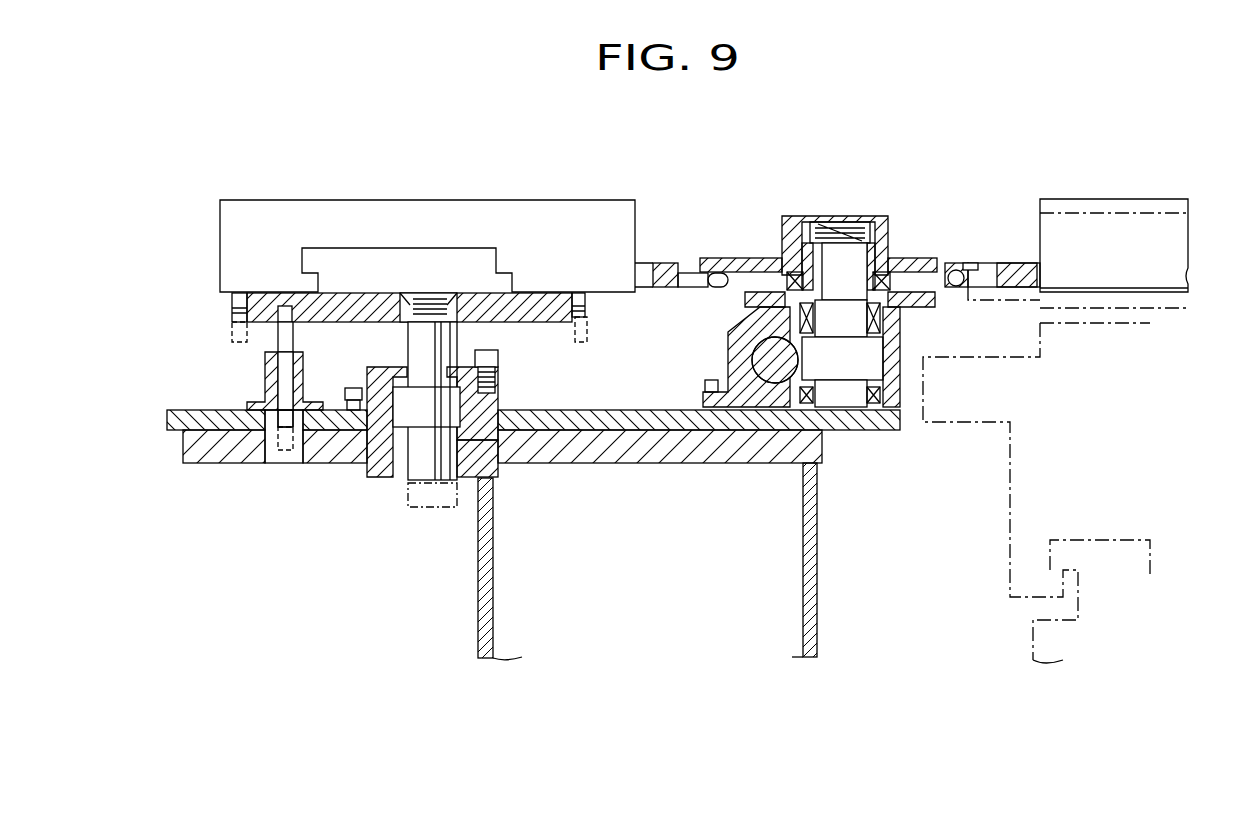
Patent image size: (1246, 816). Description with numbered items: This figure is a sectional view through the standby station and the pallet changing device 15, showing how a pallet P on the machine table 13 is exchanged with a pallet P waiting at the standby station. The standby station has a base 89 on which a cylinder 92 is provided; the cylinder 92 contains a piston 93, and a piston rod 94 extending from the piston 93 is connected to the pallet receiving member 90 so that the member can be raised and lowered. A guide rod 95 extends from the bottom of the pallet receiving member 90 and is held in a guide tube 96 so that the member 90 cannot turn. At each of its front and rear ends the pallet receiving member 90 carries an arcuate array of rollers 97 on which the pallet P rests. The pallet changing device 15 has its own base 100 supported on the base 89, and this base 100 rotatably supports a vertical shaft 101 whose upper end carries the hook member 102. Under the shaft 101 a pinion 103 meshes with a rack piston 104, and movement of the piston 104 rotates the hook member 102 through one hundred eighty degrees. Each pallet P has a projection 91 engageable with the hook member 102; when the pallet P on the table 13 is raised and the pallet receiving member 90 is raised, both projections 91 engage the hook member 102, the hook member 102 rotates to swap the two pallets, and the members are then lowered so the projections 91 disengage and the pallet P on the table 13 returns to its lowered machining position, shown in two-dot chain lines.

The table 13 is at (1150, 320).
The pallet changing device 15 is at (888, 214).
The base 89 is at (678, 452).
The pallet receiving member 90 is at (540, 310).
The projection 91 is at (668, 262).
The cylinder 92 is at (490, 458).
The piston 93 is at (495, 410).
The piston rod 94 is at (410, 333).
The guide rod 95 is at (284, 362).
The guide tube 96 is at (265, 388).
The rollers 97 is at (232, 300).
The base 100 is at (737, 342).
The vertical shaft 101 is at (853, 318).
The hook member 102 is at (915, 263).
The pinion 103 is at (897, 385).
The rack piston 104 is at (783, 380).
The pallet P is at (485, 204).